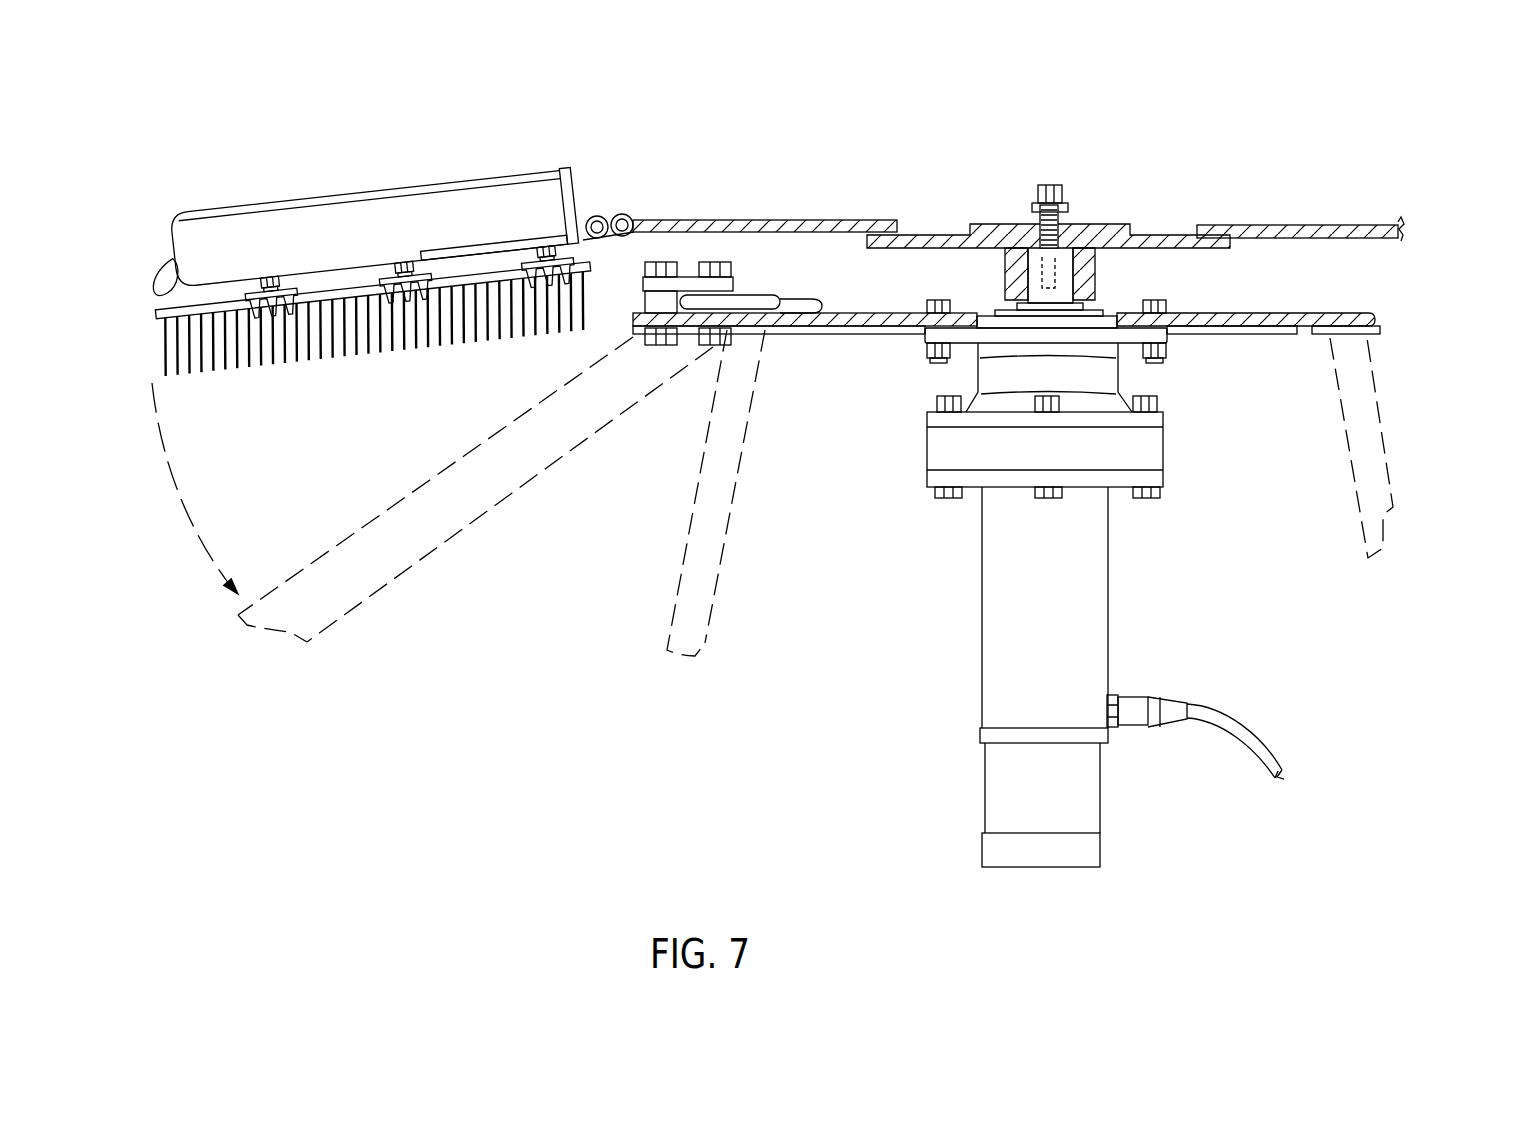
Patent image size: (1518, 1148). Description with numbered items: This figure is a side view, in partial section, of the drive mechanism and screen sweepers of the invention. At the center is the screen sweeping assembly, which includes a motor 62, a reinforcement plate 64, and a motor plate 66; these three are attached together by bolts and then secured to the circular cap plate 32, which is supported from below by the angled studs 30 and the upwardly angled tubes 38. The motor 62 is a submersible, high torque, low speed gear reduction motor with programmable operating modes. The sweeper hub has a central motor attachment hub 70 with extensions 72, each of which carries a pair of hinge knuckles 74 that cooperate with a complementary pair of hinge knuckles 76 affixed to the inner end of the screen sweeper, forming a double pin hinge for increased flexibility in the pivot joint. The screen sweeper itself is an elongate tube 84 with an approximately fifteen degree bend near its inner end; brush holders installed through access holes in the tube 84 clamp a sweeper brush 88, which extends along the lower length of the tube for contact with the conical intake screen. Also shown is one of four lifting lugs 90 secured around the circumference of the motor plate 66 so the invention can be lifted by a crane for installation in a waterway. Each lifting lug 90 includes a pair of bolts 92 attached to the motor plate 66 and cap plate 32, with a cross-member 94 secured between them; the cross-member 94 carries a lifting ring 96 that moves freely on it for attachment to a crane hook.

The studs 30 is at (478, 518).
The cap plate 32 is at (1322, 337).
The upwardly angled tubes 38 is at (712, 514).
The motor 62 is at (1108, 602).
The reinforcement plate 64 is at (882, 334).
The motor plate 66 is at (1225, 314).
The central motor attachment hub 70 is at (1067, 205).
The extensions 72 is at (817, 221).
The hinge knuckles 74 is at (628, 213).
The hinge knuckles 76 is at (602, 214).
The elongate tube 84 is at (364, 192).
The sweeper brush 88 is at (340, 362).
The lifting lugs 90 is at (731, 236).
The bolts 92 is at (645, 268).
The cross-member 94 is at (733, 289).
The lifting ring 96 is at (814, 327).